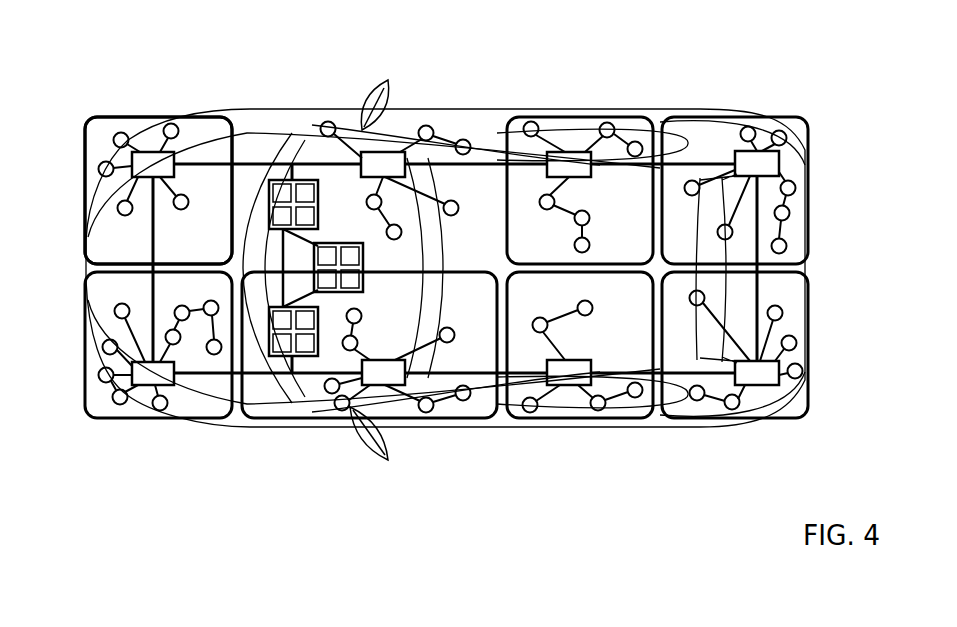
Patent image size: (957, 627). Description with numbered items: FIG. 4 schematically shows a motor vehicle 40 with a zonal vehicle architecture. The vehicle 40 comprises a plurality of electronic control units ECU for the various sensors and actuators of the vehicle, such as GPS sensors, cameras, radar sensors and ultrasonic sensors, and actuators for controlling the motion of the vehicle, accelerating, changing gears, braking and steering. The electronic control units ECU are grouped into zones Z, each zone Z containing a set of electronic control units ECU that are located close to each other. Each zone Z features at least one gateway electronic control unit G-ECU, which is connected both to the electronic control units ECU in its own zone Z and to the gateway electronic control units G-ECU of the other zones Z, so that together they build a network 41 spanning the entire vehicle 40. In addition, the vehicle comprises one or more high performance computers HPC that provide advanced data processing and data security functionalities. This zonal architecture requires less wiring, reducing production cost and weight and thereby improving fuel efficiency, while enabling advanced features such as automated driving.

The zone Z is at (143, 118).
The electronic control unit ECU is at (468, 140).
The motor vehicle 40 is at (725, 128).
The network 41 is at (757, 282).
The gateway electronic control unit G-ECU is at (146, 387).
The high performance computer HPC is at (283, 357).